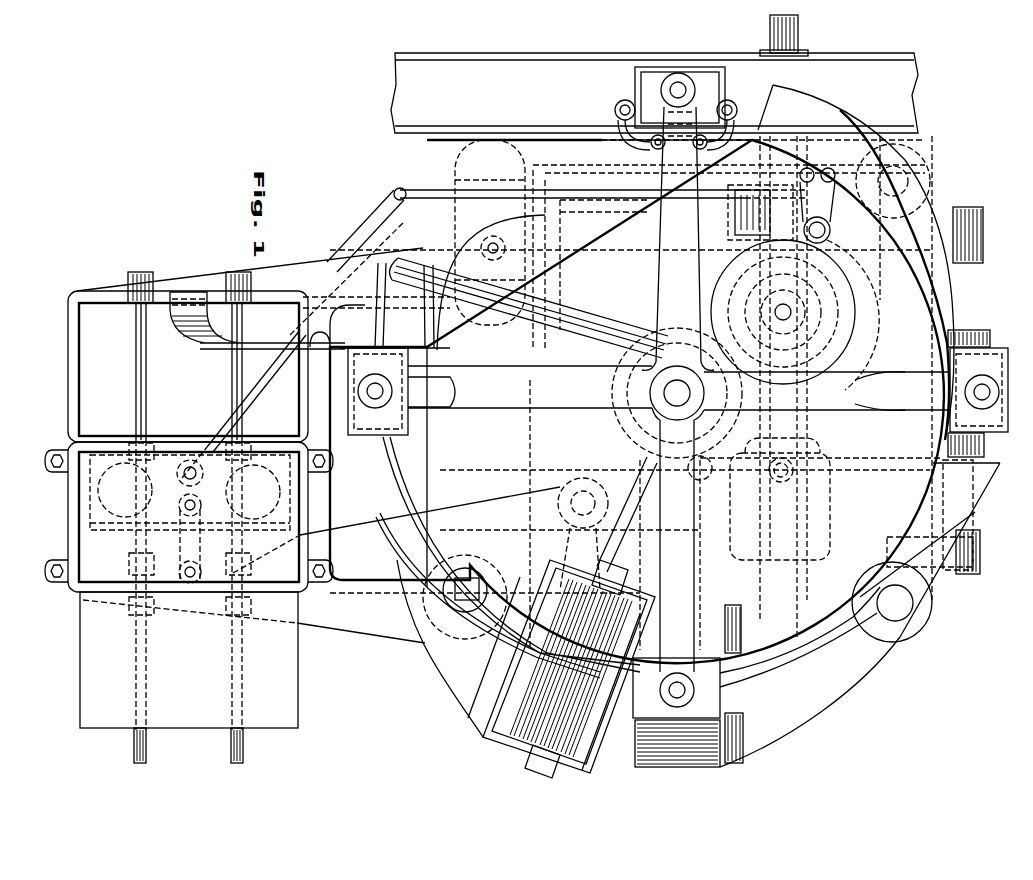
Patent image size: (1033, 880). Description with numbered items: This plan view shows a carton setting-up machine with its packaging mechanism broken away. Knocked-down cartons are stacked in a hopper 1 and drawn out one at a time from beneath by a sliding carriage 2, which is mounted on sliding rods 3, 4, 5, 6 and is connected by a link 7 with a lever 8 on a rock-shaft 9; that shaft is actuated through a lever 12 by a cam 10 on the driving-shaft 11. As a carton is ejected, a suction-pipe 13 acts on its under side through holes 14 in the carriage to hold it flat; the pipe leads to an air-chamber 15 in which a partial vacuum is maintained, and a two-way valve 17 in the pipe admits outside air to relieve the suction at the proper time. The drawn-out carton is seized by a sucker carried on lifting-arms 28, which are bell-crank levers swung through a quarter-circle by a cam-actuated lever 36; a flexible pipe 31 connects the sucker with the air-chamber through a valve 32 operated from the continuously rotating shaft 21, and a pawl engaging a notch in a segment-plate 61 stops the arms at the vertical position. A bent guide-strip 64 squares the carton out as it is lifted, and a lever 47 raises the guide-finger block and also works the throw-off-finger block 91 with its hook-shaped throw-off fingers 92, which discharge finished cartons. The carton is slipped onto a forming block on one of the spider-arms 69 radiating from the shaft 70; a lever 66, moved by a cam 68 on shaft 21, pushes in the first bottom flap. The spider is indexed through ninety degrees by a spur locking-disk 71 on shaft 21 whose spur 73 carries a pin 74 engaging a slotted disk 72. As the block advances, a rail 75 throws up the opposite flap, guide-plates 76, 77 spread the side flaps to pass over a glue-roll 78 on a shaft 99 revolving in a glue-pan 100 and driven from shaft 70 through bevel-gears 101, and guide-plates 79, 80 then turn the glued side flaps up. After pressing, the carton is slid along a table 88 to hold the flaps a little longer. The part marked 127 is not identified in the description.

The hopper 1 is at (157, 597).
The sliding carriage 2 is at (277, 697).
The sliding rod 3 is at (233, 397).
The sliding rod 4 is at (142, 383).
The sliding rod 5 is at (243, 742).
The sliding rod 6 is at (147, 743).
The link 7 is at (187, 547).
The lever 8 is at (360, 547).
The rock-shaft 9 is at (583, 503).
The cam 10 is at (823, 530).
The driving-shaft 11 is at (793, 25).
The lever 12 is at (690, 520).
The suction-pipe 13 is at (400, 190).
The holes 14 is at (125, 497).
The air-chamber 15 is at (493, 137).
The two-way valve 17 is at (800, 190).
The shaft 21 is at (790, 312).
The lifting-arms 28 is at (425, 348).
The flexible pipe 31 is at (440, 262).
The valve 32 is at (737, 233).
The cam-actuated lever 36 is at (587, 428).
The lever 47 is at (547, 350).
The segment-plate 61 is at (372, 275).
The bent guide-strip 64 is at (190, 345).
The lever 66 is at (622, 325).
The cam 68 is at (881, 369).
The spider-arm 69 is at (487, 436).
The shaft 70 is at (703, 457).
The spur locking-disk 71 is at (843, 297).
The slotted disk 72 is at (705, 428).
The spur 73 is at (813, 400).
The pin 74 is at (787, 413).
The rail 75 is at (390, 458).
The guide-plate 76 is at (513, 577).
The guide-plate 77 is at (480, 683).
The glue-roll 78 is at (603, 737).
The guide-plate 79 is at (743, 653).
The guide-plate 80 is at (790, 723).
The table 88 is at (935, 210).
The throw-off-finger block 91 is at (738, 127).
The throw-off fingers 92 is at (733, 103).
The shaft 99 is at (630, 497).
The glue-pan 100 is at (512, 752).
The bevel-gears 101 is at (693, 477).
The top bar 127 is at (654, 93).